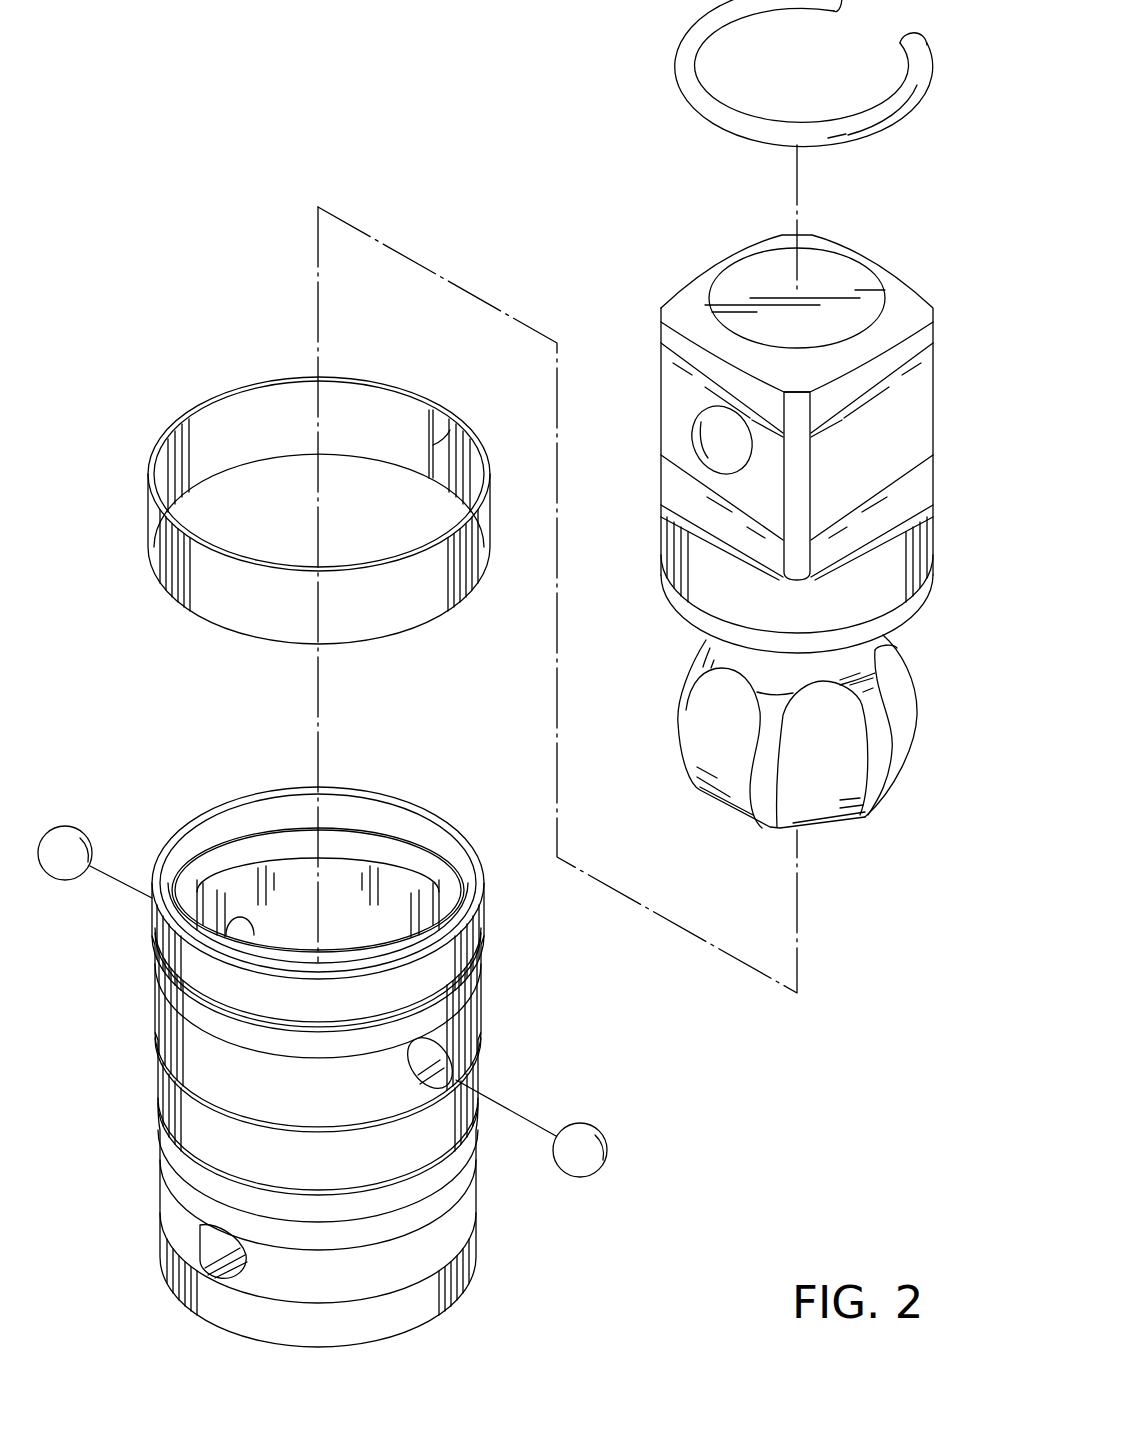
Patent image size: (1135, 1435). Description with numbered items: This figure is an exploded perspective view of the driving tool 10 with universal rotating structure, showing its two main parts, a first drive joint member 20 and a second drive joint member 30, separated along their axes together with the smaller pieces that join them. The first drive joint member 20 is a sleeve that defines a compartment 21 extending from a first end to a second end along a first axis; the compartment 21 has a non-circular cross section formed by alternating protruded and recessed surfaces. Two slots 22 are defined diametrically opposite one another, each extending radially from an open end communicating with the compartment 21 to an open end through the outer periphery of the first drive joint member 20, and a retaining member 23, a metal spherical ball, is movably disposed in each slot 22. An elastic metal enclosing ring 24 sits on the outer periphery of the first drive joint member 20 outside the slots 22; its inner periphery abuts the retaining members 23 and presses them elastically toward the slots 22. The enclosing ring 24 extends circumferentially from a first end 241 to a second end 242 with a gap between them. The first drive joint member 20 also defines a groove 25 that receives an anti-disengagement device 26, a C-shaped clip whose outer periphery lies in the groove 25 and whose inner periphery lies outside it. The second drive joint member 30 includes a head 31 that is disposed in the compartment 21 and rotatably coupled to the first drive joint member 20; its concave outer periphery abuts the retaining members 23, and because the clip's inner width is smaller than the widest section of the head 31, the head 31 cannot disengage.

The driving tool 10 is at (218, 250).
The first drive joint member 20 is at (372, 1036).
The compartment 21 is at (276, 860).
The slot 22 is at (434, 1056).
The retaining member 23 is at (78, 845).
The enclosing ring 24 is at (324, 519).
The first end 241 is at (437, 446).
The second end 242 is at (431, 410).
The groove 25 is at (385, 852).
The anti-disengagement device 26 is at (685, 92).
The second drive joint member 30 is at (627, 358).
The head 31 is at (851, 852).